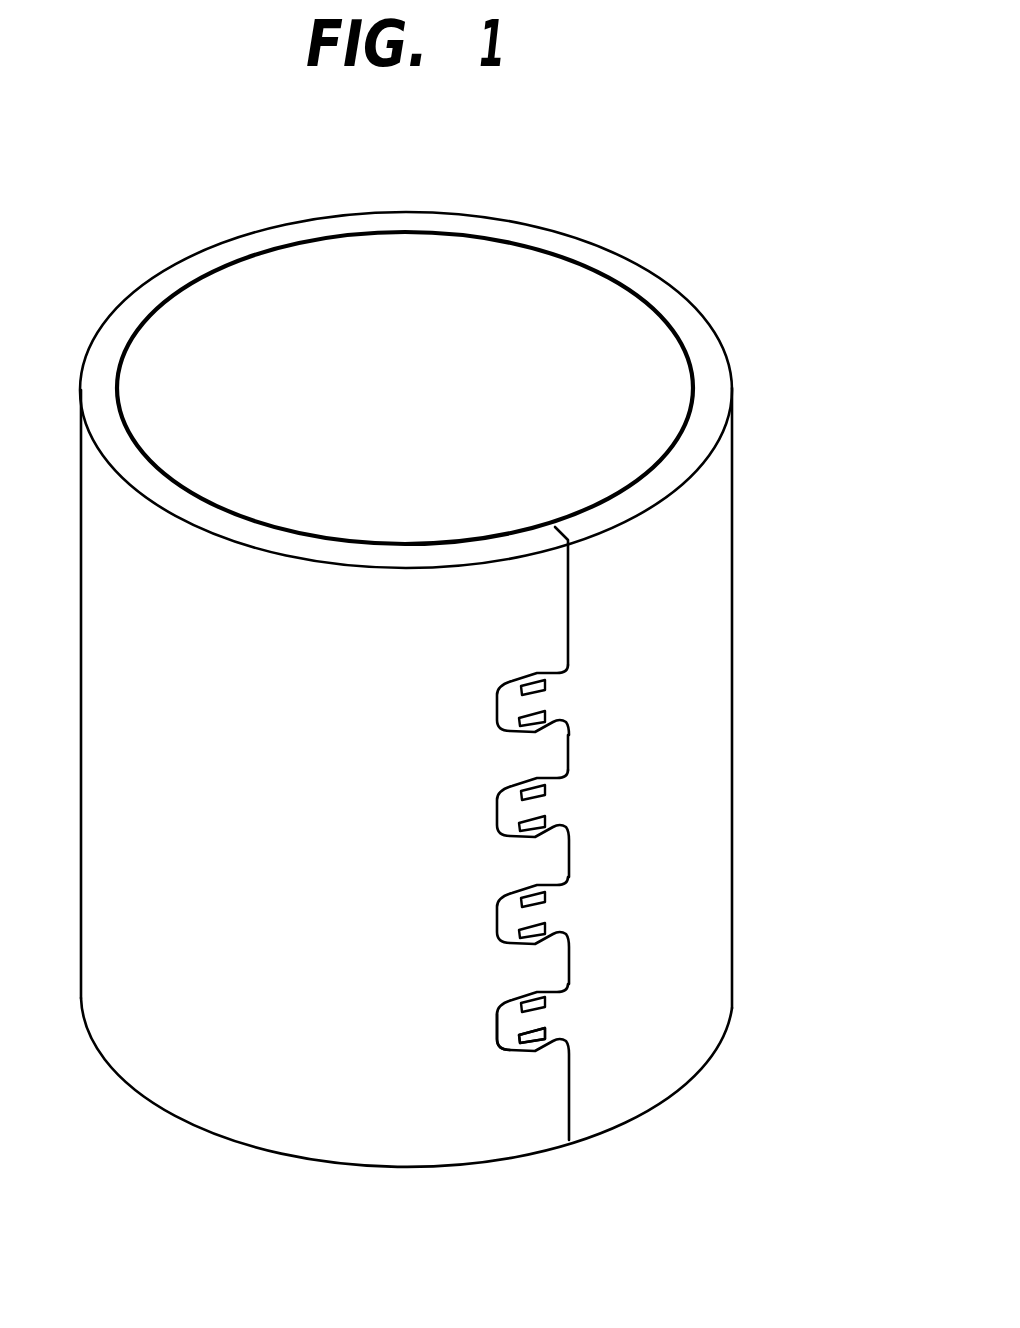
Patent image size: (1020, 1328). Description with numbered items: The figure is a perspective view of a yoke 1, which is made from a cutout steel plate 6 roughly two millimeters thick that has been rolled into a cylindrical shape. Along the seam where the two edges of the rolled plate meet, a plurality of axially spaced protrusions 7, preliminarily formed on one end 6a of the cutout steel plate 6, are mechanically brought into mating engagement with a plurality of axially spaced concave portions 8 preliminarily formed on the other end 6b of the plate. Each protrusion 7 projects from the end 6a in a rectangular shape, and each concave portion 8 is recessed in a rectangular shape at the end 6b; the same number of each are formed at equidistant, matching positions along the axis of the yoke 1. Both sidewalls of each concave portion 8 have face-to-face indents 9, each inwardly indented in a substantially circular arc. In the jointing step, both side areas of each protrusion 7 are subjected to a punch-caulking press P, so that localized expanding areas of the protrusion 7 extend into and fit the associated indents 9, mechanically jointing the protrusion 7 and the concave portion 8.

The yoke 1 is at (468, 727).
The cutout steel plate 6 is at (732, 706).
The one end of the cutout steel plate 6a is at (603, 593).
The other end of the cutout steel plate 6b is at (523, 597).
The protrusion 7 is at (495, 1043).
The concave portion 8 is at (543, 1013).
The indent 9 is at (535, 1047).
The punch-caulking press P is at (545, 921).